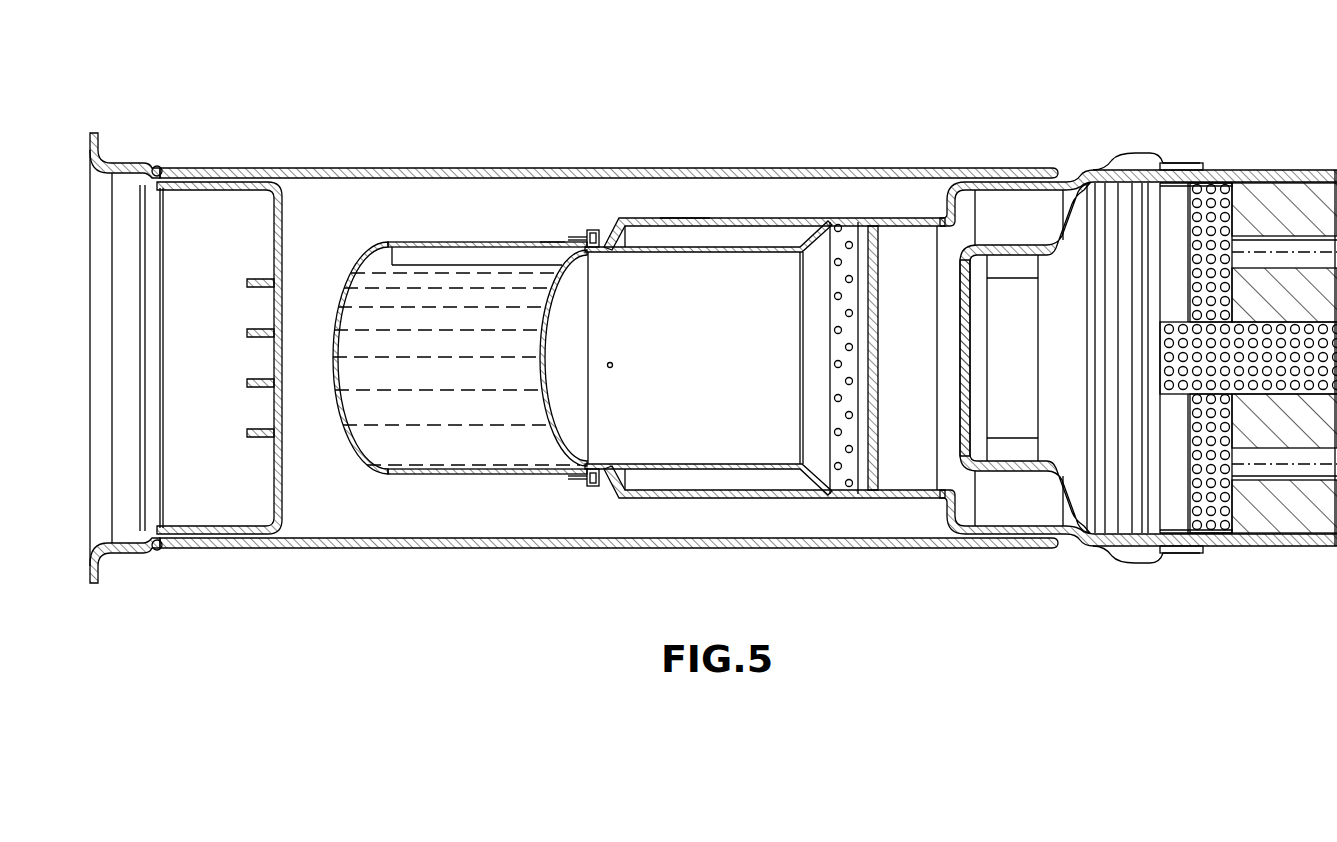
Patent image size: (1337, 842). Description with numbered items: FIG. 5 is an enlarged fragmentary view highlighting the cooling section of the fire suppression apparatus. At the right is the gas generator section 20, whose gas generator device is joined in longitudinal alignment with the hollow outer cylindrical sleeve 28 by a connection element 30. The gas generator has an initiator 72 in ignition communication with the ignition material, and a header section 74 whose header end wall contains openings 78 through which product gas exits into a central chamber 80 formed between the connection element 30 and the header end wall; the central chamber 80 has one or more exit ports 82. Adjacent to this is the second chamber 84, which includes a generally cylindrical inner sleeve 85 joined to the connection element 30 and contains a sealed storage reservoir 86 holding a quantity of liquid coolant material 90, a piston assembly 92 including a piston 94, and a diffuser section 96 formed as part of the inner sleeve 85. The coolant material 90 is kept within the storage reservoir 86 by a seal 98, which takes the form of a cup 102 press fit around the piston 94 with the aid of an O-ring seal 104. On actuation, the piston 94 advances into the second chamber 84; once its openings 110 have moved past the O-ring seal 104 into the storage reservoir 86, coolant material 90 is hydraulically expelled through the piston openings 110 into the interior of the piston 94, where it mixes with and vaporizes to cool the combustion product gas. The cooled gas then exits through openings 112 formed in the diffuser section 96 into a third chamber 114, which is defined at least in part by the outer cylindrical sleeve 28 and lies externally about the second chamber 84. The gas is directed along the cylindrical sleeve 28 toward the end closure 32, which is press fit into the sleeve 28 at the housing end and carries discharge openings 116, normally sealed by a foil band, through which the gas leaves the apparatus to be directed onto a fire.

The gas generator section 20 is at (1267, 158).
The hollow cylindrical sleeve 28 is at (381, 167).
The connection element 30 is at (945, 192).
The end closure 32 is at (121, 558).
The initiator 72 is at (987, 463).
The header section 74 is at (1093, 258).
The openings 78 is at (1012, 463).
The central chamber 80 is at (990, 208).
The exit ports 82 is at (873, 415).
The second chamber 84 is at (549, 234).
The cylindrical sleeve 85 is at (683, 218).
The sealed storage reservoir 86 is at (493, 243).
The coolant material 90 is at (455, 437).
The piston assembly 92 is at (638, 452).
The piston 94 is at (718, 440).
The diffuser section 96 is at (768, 487).
The seal 98 is at (578, 490).
The cup 102 is at (402, 478).
The O-ring seal 104 is at (600, 230).
The piston openings 110 is at (611, 363).
The diffuser openings 112 is at (838, 220).
The third chamber 114 is at (330, 228).
The discharge openings 116 is at (278, 268).